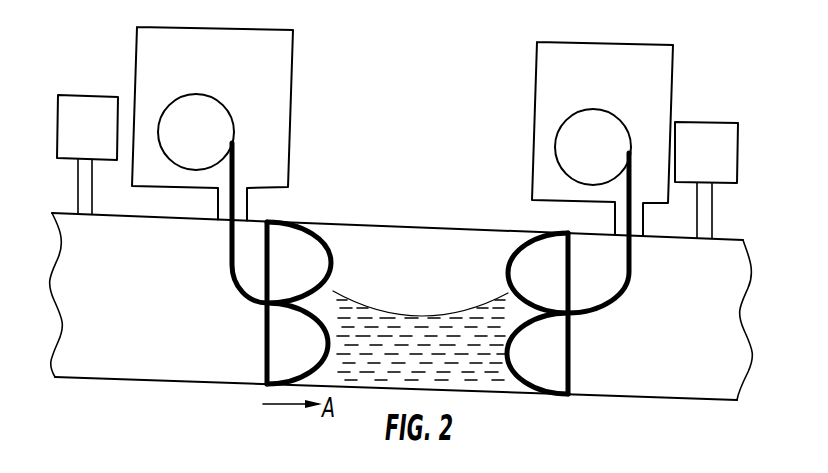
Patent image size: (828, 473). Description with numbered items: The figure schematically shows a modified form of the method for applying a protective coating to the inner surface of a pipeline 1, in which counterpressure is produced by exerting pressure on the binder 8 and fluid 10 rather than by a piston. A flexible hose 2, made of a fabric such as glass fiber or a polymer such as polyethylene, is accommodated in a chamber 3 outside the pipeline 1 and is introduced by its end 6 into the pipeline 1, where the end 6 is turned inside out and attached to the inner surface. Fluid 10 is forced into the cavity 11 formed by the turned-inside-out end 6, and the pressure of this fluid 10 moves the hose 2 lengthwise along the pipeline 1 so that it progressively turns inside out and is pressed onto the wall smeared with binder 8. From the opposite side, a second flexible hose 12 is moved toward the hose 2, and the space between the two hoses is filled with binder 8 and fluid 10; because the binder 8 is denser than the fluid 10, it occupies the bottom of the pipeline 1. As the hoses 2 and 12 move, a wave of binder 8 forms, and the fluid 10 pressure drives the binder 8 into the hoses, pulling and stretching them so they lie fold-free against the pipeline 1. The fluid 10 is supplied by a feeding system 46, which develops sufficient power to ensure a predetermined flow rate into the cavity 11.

The pipeline 1 is at (417, 221).
The flexible hose 2 is at (237, 177).
The chamber 3 is at (293, 82).
The end of the flexible hose 6 is at (253, 250).
The binder 8 is at (343, 315).
The fluid 10 is at (128, 365).
The cavity 11 is at (303, 245).
The second flexible hose 12 is at (627, 265).
The system for feeding the fluid 46 is at (80, 108).